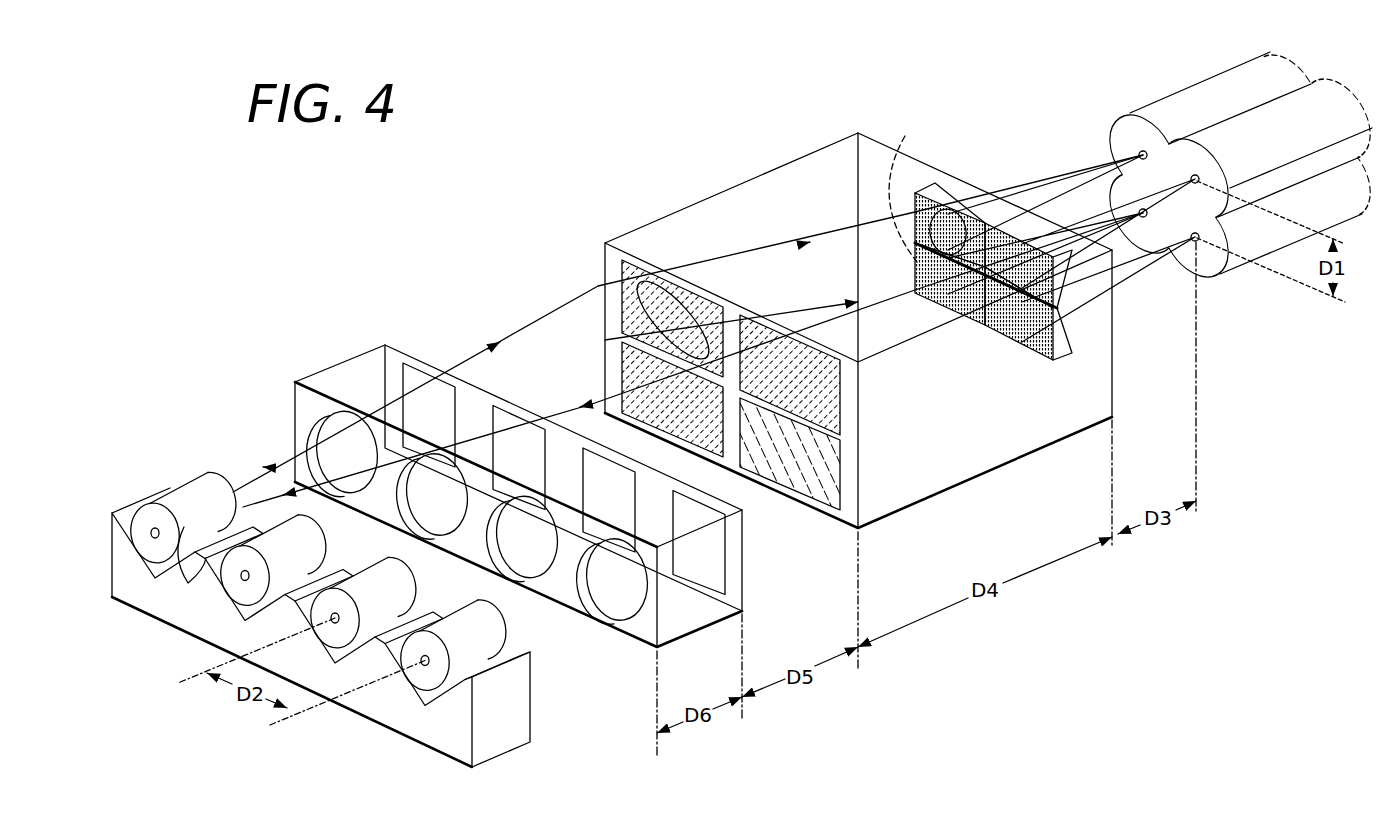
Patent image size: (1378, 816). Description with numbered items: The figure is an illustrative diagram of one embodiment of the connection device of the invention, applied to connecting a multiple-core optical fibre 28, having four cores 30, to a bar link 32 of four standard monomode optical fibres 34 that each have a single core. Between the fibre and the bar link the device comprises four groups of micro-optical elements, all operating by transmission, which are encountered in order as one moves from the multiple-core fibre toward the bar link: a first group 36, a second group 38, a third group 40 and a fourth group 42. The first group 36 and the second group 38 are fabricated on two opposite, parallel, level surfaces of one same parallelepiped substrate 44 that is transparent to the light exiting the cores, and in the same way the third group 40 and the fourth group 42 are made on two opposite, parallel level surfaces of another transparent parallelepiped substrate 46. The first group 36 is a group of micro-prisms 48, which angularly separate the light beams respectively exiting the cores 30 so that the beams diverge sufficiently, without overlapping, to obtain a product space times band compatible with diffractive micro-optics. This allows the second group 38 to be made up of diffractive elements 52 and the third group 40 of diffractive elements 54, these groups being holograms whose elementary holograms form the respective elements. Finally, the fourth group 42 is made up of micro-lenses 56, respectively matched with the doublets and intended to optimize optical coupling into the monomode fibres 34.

The multiple-core optical fibre 28 is at (1185, 66).
The cores 30 is at (1191, 177).
The bar link 32 is at (143, 492).
The standard monomode optical fibres 34 is at (185, 570).
The first group of micro-optical elements 36 is at (965, 194).
The second group of micro-optical elements 38 is at (808, 520).
The third group of micro-optical elements 40 is at (645, 491).
The fourth group of micro-optical elements 42 is at (460, 546).
The parallelepiped substrate 44 is at (727, 212).
The parallelepiped substrate 46 is at (342, 370).
The micro-prisms 48 is at (929, 186).
The diffractive elements 52 is at (640, 353).
The diffractive elements 54 is at (460, 402).
The micro-lenses 56 is at (592, 587).